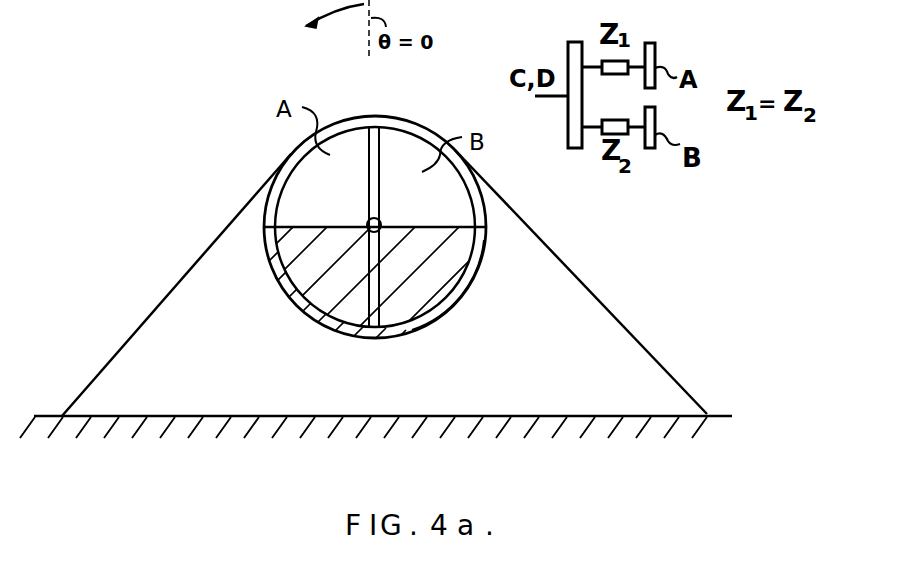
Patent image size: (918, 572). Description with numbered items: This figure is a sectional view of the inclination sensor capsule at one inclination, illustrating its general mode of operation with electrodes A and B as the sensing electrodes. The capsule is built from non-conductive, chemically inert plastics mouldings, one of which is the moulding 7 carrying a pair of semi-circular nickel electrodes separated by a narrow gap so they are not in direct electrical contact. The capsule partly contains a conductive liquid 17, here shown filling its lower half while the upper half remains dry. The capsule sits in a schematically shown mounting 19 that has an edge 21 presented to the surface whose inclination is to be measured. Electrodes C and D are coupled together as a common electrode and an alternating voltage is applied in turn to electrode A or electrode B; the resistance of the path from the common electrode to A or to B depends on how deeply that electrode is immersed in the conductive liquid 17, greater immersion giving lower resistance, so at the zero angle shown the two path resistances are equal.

The moulding 7 is at (400, 117).
The conductive liquid 17 is at (272, 240).
The mounting 19 is at (636, 344).
The edge 21 is at (512, 413).